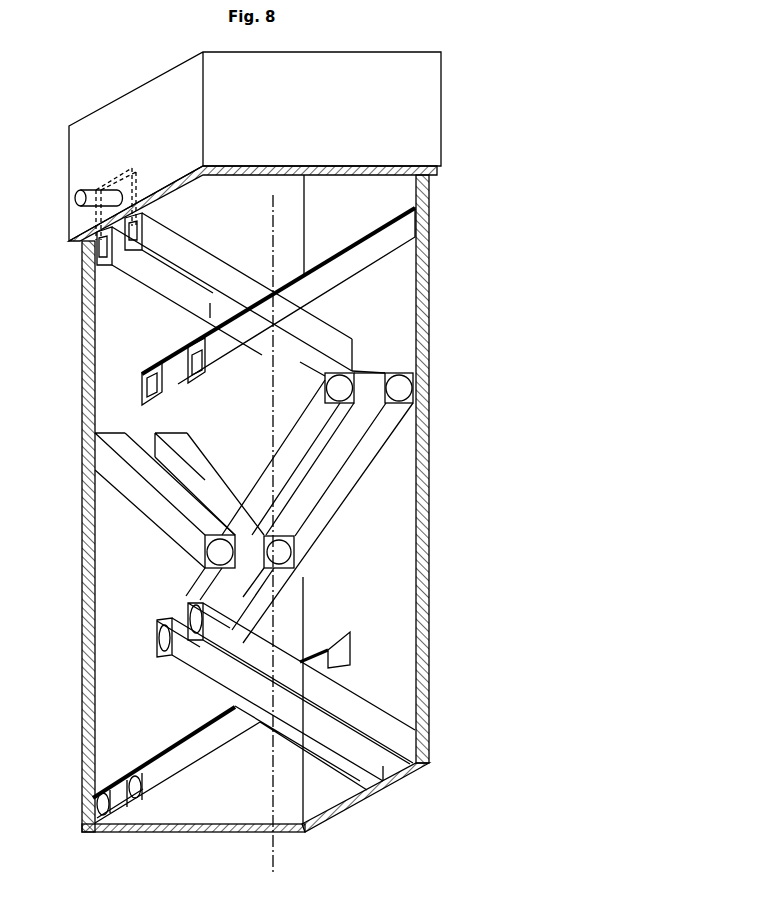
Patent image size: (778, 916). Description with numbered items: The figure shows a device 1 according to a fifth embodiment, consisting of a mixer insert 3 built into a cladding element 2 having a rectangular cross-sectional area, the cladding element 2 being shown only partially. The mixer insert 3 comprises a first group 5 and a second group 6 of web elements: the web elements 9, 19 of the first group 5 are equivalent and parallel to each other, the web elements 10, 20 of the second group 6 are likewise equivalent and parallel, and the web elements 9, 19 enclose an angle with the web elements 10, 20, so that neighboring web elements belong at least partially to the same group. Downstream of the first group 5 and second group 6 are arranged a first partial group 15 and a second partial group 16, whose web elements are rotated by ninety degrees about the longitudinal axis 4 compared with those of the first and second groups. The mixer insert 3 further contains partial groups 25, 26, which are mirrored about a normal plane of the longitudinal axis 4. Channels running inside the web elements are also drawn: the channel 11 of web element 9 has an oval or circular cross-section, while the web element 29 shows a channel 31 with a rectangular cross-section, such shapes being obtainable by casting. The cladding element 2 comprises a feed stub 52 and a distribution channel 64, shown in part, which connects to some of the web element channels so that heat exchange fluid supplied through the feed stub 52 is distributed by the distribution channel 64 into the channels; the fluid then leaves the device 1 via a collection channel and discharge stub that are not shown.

The device 1 is at (48, 598).
The cladding element 2 is at (72, 184).
The mixer insert 3 is at (136, 650).
The longitudinal axis 4 is at (268, 857).
The first group 5 is at (346, 783).
The second group 6 is at (141, 746).
The web element 9 is at (363, 712).
The web element 10 is at (157, 775).
The channel 11 is at (189, 615).
The first partial group 15 is at (269, 450).
The second partial group 16 is at (136, 511).
The web element 19 is at (316, 748).
The web element 20 is at (118, 805).
The further partial group 25 is at (299, 276).
The further partial group 26 is at (136, 298).
The web element 29 is at (371, 248).
The channel 31 is at (186, 360).
The feed stub 52 is at (92, 195).
The distribution channel 64 is at (97, 240).